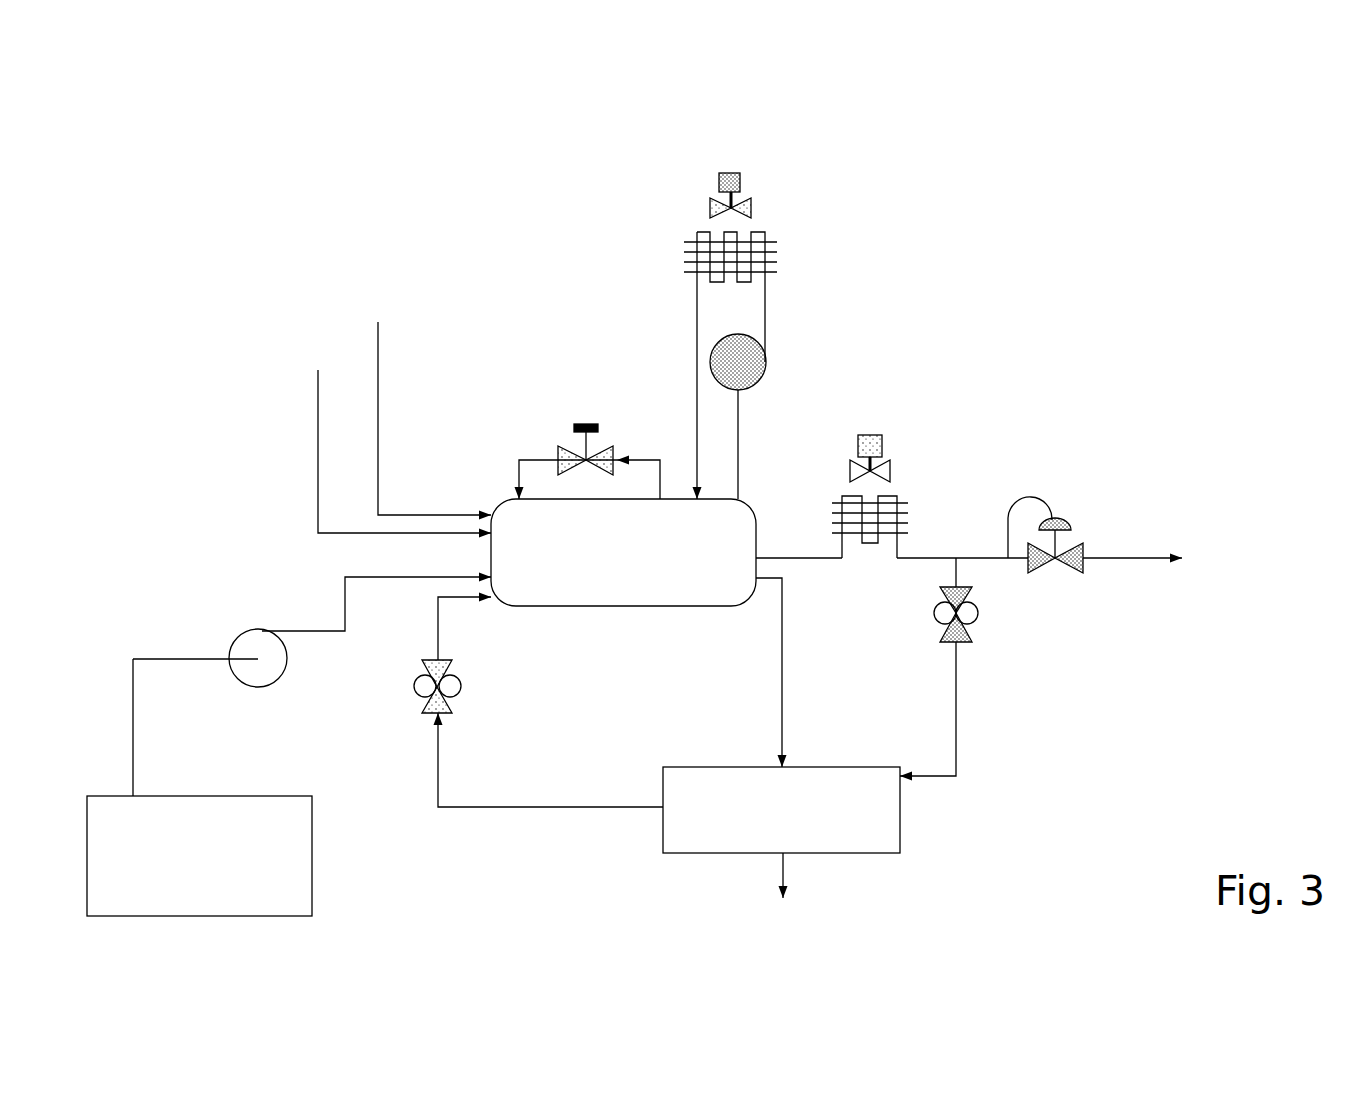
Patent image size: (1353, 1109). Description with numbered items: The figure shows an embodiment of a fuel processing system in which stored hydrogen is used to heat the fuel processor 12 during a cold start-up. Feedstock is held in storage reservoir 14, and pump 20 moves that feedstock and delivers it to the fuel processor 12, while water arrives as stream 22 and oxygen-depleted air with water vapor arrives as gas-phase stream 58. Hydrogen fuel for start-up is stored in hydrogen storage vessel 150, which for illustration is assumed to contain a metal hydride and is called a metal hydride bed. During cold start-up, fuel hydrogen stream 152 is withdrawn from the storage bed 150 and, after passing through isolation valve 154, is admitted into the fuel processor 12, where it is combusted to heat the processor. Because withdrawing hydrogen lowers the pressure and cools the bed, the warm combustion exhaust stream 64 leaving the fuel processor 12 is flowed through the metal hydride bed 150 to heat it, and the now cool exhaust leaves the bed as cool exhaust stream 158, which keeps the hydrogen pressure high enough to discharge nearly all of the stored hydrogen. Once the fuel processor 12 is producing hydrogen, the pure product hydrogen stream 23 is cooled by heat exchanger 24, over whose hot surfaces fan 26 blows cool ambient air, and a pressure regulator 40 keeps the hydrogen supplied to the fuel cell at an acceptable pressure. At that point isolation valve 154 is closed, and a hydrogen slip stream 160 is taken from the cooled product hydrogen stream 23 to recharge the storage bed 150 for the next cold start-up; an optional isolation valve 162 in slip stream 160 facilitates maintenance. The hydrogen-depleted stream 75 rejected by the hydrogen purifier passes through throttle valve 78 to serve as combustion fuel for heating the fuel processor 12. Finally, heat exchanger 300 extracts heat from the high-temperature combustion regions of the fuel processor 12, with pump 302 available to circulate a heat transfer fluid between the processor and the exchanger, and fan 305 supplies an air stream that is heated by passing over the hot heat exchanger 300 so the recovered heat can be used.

The fuel processor 12 is at (650, 606).
The storage reservoir 14 is at (312, 833).
The pump 20 is at (233, 637).
The stream 22 is at (318, 443).
The product hydrogen stream 23 is at (790, 560).
The heat exchanger 24 is at (873, 546).
The fan 26 is at (882, 444).
The pressure regulator 40 is at (1085, 549).
The gas-phase stream 58 is at (378, 395).
The combustion exhaust stream 64 is at (782, 663).
The hydrogen-depleted stream 75 is at (631, 458).
The throttle valve 78 is at (574, 428).
The hydrogen storage vessel 150 is at (900, 822).
The fuel hydrogen stream 152 is at (438, 767).
The isolation valve 154 is at (416, 686).
The cool exhaust stream 158 is at (790, 869).
The hydrogen slip stream 160 is at (960, 705).
The isolation valve 162 is at (978, 613).
The heat exchanger 300 is at (685, 233).
The pump 302 is at (768, 372).
The fan 305 is at (742, 182).